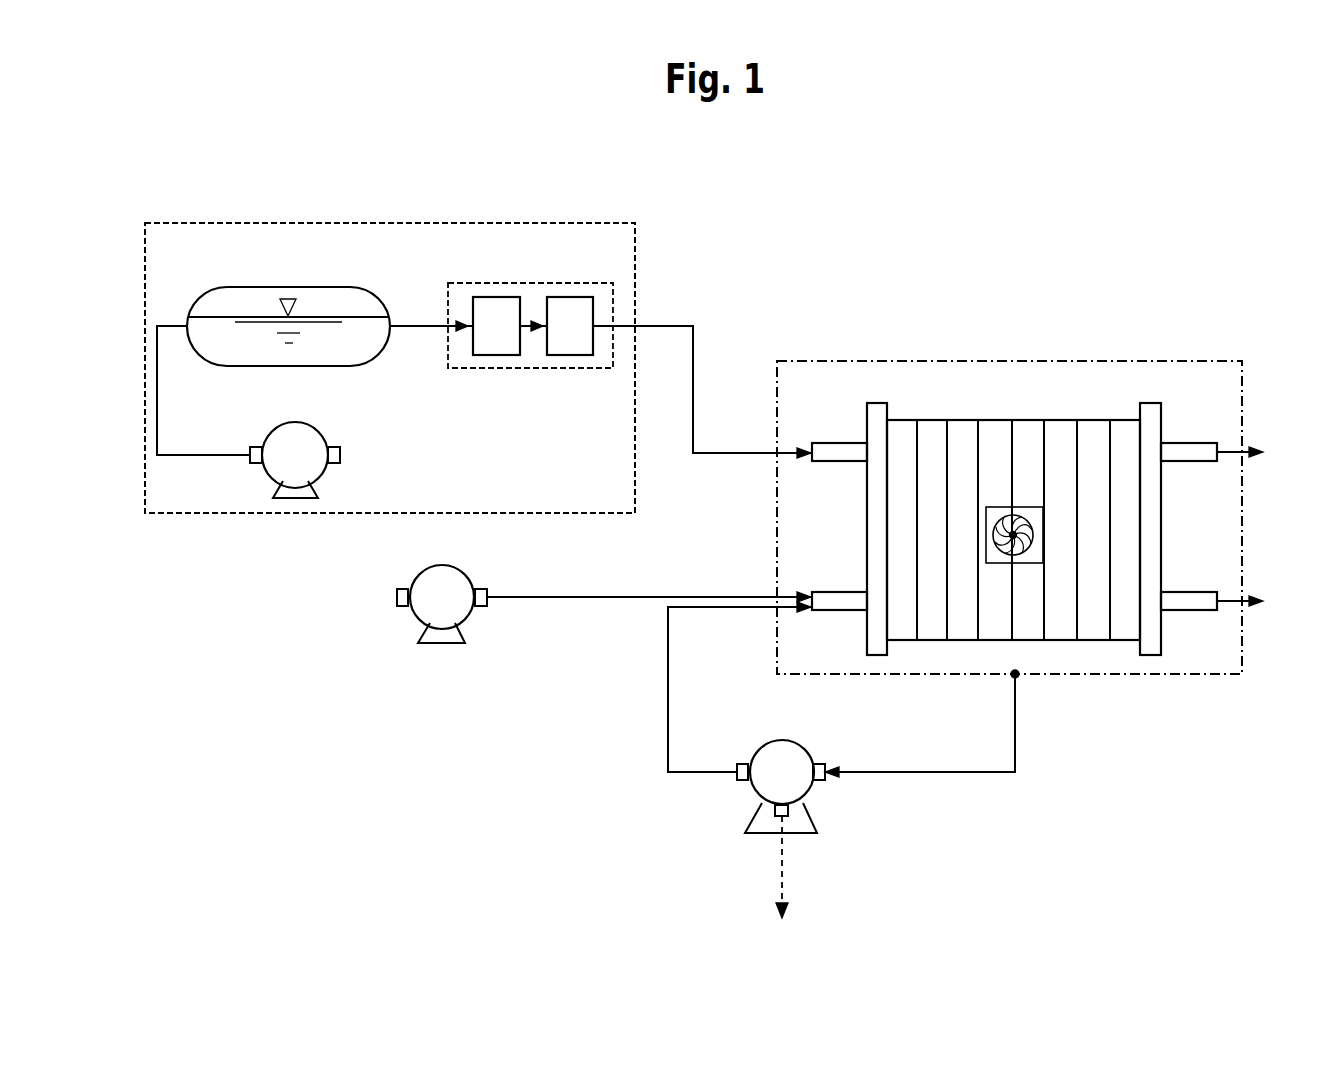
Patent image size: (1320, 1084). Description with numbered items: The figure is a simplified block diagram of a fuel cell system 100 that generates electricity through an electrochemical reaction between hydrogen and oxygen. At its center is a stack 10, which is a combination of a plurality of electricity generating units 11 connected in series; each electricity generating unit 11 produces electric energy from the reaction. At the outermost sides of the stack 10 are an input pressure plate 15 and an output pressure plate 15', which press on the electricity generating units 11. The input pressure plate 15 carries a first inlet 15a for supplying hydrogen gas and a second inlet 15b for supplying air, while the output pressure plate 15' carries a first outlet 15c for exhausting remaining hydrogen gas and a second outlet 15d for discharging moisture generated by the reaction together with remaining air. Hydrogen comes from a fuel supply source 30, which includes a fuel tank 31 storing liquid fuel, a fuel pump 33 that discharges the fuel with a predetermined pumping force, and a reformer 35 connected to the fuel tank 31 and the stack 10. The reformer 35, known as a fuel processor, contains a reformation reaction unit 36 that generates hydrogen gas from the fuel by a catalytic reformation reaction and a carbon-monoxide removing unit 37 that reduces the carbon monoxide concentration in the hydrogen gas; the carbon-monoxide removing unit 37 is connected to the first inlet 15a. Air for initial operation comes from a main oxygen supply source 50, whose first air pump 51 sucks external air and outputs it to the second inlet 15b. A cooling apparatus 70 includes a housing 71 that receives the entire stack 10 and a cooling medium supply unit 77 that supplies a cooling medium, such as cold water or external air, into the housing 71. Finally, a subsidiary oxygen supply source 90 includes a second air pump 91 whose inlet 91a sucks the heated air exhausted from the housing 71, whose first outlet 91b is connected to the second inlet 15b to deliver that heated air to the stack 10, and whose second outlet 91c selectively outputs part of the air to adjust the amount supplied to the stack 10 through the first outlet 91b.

The fuel cell system 100 is at (718, 172).
The stack 10 is at (1097, 382).
The electricity generating unit 11 is at (1098, 630).
The input pressure plate 15 is at (853, 529).
The output pressure plate 15' is at (1176, 529).
The first inlet 15a is at (830, 443).
The second inlet 15b is at (825, 592).
The first outlet 15c is at (1195, 592).
The second outlet 15d is at (1193, 443).
The fuel supply source 30 is at (499, 222).
The fuel tank 31 is at (265, 287).
The fuel pump 33 is at (299, 422).
The reformer 35 is at (465, 283).
The reformation reaction unit 36 is at (493, 297).
The carbon-monoxide removing unit 37 is at (577, 297).
The main oxygen supply source 50 is at (556, 583).
The first air pump 51 is at (452, 565).
The cooling apparatus 70 is at (932, 272).
The housing 71 is at (929, 360).
The cooling medium supply unit 77 is at (1000, 492).
The subsidiary oxygen supply source 90 is at (836, 760).
The second air pump 91 is at (788, 741).
The inlet 91a is at (819, 763).
The first outlet 91b is at (742, 763).
The second outlet 91c is at (812, 805).